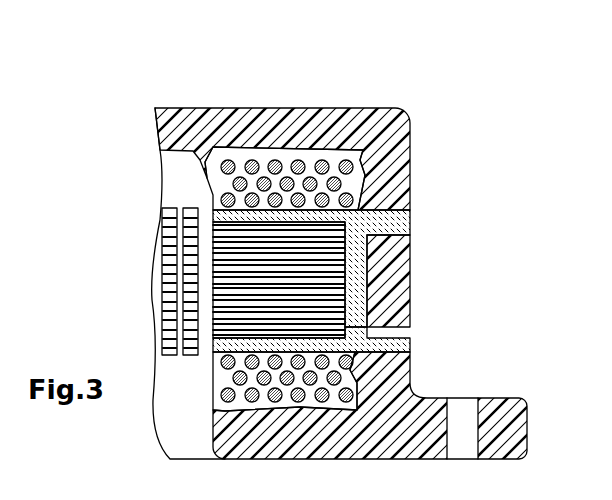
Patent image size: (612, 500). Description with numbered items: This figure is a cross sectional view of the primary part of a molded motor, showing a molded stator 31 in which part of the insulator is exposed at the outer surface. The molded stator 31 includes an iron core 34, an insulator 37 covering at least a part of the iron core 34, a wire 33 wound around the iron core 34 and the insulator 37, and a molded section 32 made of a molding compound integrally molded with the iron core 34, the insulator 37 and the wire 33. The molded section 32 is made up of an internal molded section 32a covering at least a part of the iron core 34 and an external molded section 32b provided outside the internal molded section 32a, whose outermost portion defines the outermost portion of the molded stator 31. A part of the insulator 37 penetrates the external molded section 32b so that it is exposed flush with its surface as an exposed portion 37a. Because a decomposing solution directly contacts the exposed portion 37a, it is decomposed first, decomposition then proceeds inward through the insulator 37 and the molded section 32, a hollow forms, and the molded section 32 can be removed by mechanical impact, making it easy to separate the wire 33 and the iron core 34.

The molded stator 31 is at (171, 85).
The molded section 32 is at (403, 44).
The internal molded section 32a is at (333, 158).
The external molded section 32b is at (367, 120).
The wire 33 is at (247, 162).
The iron core 34 is at (215, 230).
The insulator 37 is at (395, 225).
The exposed portion 37a is at (400, 340).